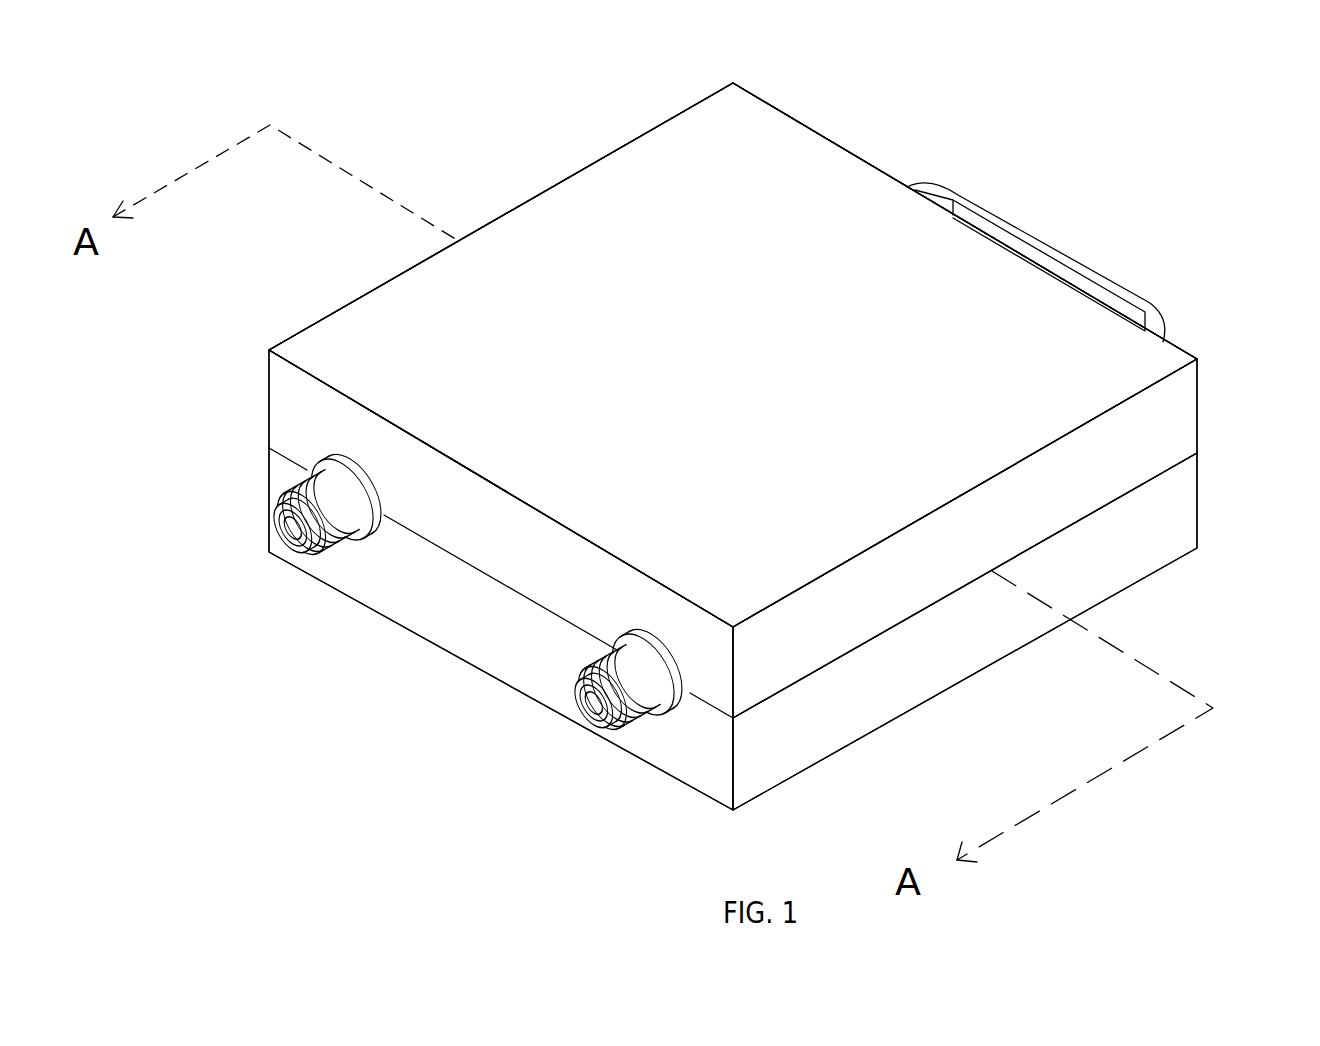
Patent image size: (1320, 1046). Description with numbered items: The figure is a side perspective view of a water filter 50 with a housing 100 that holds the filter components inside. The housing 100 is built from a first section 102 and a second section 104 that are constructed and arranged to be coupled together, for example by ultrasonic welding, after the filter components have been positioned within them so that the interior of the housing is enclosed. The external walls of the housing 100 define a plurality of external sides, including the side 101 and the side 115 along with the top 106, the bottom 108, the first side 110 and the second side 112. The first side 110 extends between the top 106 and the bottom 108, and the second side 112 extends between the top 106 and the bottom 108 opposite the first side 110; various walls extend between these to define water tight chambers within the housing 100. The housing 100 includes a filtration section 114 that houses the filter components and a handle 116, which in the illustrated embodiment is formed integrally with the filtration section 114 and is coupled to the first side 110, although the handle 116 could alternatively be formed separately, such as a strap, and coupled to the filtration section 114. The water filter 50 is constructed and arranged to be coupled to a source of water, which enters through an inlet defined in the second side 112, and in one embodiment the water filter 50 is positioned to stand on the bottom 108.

The water filter 50 is at (1207, 74).
The housing 100 is at (983, 63).
The external side 101 is at (365, 352).
The first section 102 is at (1167, 430).
The second section 104 is at (1167, 520).
The top 106 is at (878, 707).
The bottom 108 is at (525, 202).
The first side 110 is at (778, 105).
The second side 112 is at (427, 605).
The filtration section 114 is at (663, 167).
The external side 115 is at (590, 728).
The handle 116 is at (1067, 250).